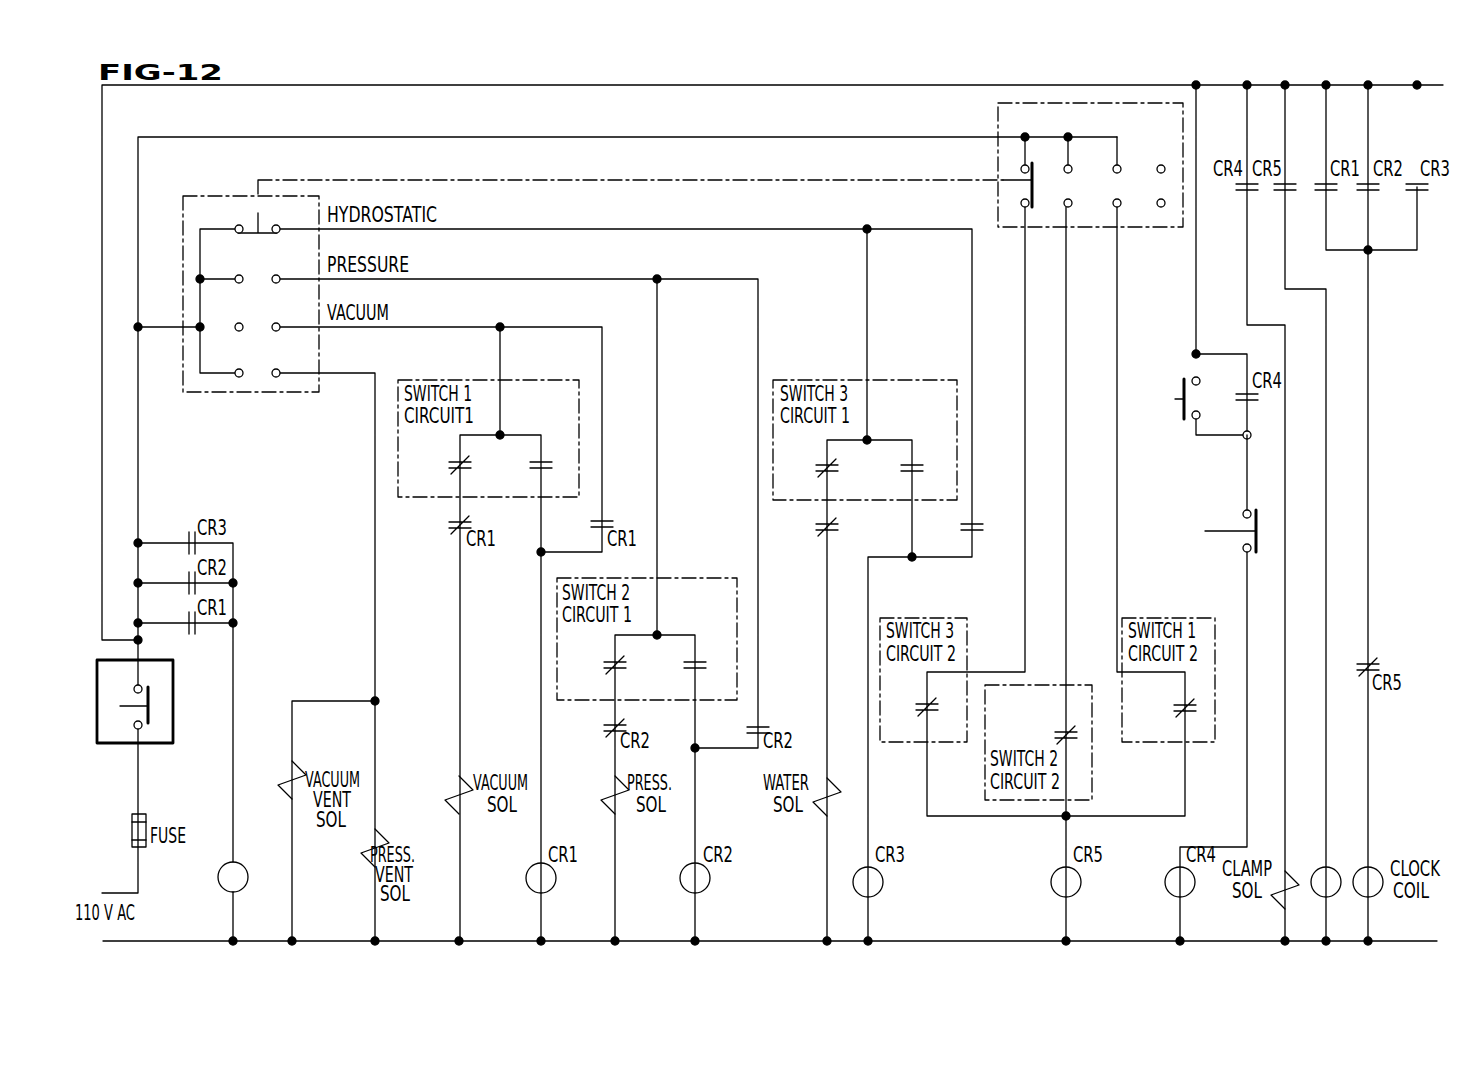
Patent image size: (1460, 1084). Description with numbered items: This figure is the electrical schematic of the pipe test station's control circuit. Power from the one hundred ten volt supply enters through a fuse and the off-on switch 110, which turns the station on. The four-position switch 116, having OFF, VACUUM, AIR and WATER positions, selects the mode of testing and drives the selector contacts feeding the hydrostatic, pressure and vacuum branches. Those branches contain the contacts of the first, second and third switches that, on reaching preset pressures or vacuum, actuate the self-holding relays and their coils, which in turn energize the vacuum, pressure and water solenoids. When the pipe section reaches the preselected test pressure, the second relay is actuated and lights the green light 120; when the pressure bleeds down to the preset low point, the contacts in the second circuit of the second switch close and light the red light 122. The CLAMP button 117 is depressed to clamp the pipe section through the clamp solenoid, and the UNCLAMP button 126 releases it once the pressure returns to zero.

The four-position switch 116 is at (222, 196).
The off-on switch 110 is at (126, 745).
The green light 120 is at (219, 876).
The CLAMP button 117 is at (1183, 382).
The UNCLAMP button 126 is at (1222, 530).
The red light 122 is at (1337, 870).